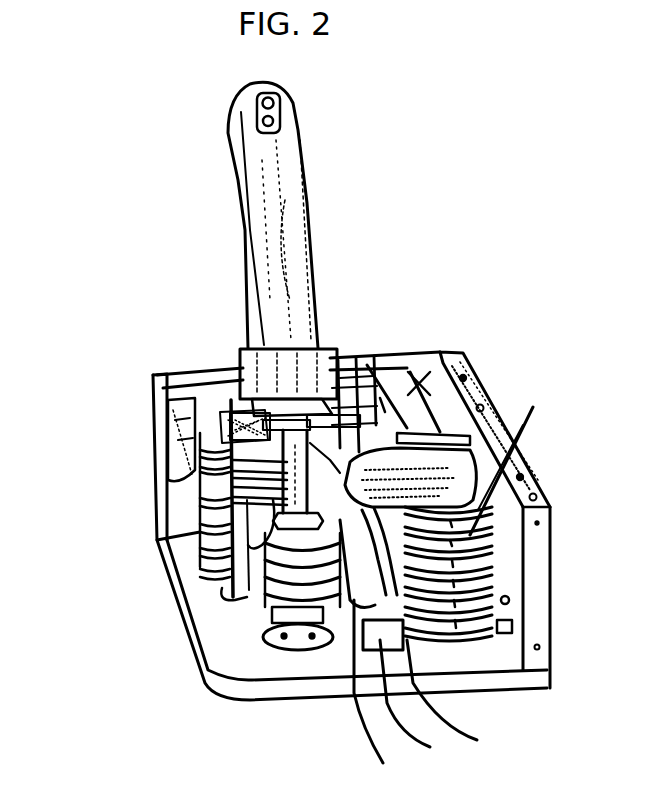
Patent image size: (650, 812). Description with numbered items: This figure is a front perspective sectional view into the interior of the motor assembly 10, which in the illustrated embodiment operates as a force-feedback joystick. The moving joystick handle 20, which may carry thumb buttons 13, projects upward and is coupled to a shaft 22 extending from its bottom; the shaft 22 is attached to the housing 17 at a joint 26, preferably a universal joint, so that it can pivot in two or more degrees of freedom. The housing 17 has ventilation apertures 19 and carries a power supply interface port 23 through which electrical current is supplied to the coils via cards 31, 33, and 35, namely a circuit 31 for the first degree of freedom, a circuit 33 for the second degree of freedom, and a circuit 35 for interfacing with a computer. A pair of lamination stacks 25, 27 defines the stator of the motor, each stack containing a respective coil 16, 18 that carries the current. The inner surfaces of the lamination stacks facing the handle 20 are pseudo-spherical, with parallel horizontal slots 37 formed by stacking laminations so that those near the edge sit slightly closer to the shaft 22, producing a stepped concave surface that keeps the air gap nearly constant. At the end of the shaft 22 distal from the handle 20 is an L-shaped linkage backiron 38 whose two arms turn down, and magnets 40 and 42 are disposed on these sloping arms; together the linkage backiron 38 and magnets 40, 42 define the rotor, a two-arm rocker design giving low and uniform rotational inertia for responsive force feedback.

The motor assembly 10 is at (432, 166).
The thumb buttons 13 is at (272, 100).
The coil 16 is at (225, 480).
The housing 17 is at (552, 550).
The coil 18 is at (512, 455).
The ventilation apertures 19 is at (408, 352).
The joystick handle 20 is at (306, 167).
The shaft 22 is at (250, 630).
The power supply interface port 23 is at (158, 428).
The lamination stack 25 is at (233, 480).
The joint 26 is at (318, 651).
The lamination stack 27 is at (523, 457).
The circuit 31 is at (370, 365).
The circuit 33 is at (410, 378).
The circuit 35 is at (483, 372).
The parallel horizontal slots 37 is at (454, 697).
The linkage backiron 38 is at (378, 693).
The magnet 40 is at (200, 565).
The magnet 42 is at (414, 704).